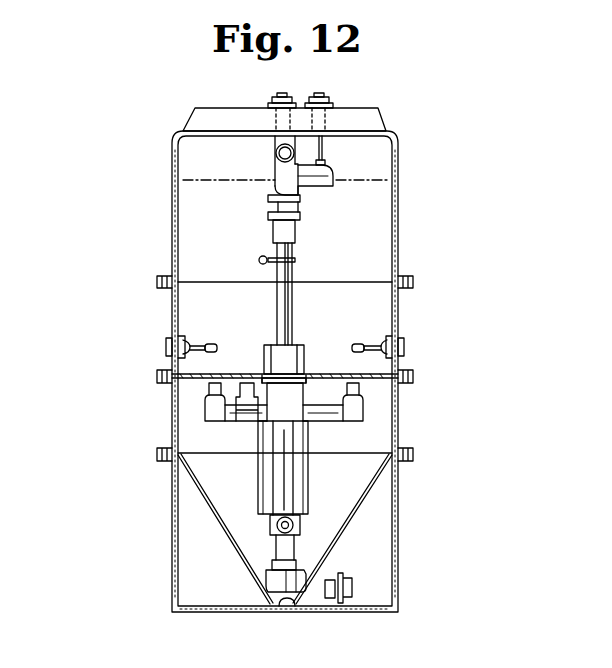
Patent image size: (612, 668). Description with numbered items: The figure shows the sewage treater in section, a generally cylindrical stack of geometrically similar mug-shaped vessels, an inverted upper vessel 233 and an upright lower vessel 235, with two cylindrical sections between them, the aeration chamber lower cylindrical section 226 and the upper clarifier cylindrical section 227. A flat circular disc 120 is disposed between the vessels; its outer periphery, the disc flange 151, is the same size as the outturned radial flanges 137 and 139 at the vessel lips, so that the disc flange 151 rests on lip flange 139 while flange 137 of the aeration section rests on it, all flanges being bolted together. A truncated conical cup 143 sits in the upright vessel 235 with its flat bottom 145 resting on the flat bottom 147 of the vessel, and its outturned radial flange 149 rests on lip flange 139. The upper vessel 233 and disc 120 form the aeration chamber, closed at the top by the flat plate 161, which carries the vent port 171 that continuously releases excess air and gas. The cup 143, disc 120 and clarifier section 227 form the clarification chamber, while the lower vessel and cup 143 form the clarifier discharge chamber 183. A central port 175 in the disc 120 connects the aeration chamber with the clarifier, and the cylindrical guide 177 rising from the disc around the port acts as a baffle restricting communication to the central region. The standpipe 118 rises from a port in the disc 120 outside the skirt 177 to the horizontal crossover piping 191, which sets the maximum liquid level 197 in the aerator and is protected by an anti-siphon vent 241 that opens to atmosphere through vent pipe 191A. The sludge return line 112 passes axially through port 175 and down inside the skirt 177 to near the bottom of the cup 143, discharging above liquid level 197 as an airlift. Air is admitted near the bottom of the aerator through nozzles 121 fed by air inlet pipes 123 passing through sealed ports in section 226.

The sludge return line 112 is at (276, 170).
The standpipe 118 is at (277, 298).
The flat circular plate or disc 120 is at (304, 392).
The nozzles 121 is at (208, 344).
The air inlet pipes 123 is at (172, 367).
The outturned radial flanges 137 is at (401, 371).
The lip flange 139 is at (405, 384).
The truncated conical cup 143 is at (206, 500).
The flat bottom of the cup 145 is at (295, 612).
The flat bottom of the upright vessel 147 is at (190, 613).
The outturned radial flange of the cup 149 is at (413, 453).
The disc flange 151 is at (413, 377).
The flat top plate 161 is at (200, 128).
The vent port 171 is at (280, 94).
The central port 175 is at (265, 392).
The cylindrical guide 177 is at (272, 347).
The clarifier discharge chamber 183 is at (224, 580).
The horizontal crossover piping 191 is at (334, 176).
The vent pipe 191A is at (323, 145).
The maximum liquid level 197 is at (192, 180).
The aeration chamber lower cylindrical section 226 is at (172, 297).
The upper clarifier cylindrical section 227 is at (172, 407).
The upper vessel 233 is at (172, 214).
The lower upright vessel 235 is at (172, 564).
The anti-siphon vent 241 is at (322, 96).